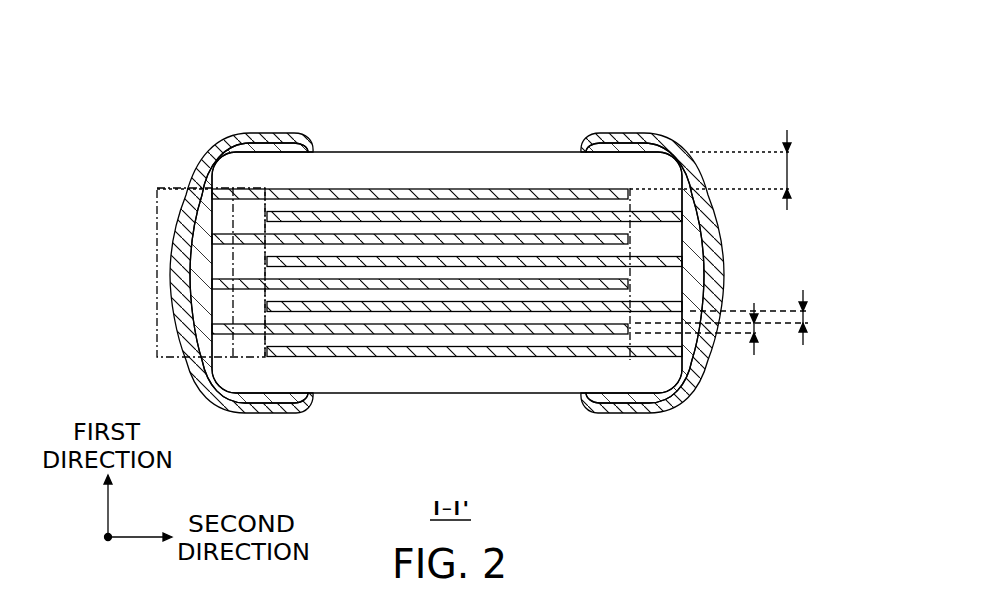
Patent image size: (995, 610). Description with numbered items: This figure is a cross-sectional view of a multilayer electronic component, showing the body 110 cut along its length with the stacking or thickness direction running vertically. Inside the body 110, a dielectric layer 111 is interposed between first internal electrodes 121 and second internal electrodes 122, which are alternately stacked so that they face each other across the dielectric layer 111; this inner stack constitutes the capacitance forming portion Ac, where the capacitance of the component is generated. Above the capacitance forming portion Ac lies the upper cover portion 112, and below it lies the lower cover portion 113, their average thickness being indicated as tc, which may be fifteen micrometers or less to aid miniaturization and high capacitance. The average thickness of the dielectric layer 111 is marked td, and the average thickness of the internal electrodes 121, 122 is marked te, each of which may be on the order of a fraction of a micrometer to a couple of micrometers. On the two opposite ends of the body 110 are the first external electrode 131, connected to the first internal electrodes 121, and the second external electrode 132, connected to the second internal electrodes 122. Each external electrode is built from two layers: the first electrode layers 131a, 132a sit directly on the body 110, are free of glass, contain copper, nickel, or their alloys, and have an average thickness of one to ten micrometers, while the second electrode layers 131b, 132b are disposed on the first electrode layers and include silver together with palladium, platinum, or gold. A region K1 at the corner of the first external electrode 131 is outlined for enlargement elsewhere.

The body 110 is at (405, 151).
The dielectric layer 111 is at (343, 228).
The upper cover portion 112 is at (462, 168).
The lower cover portion 113 is at (462, 372).
The first internal electrode 121 is at (512, 194).
The second internal electrode 122 is at (563, 216).
The first external electrode 131 is at (168, 273).
The first electrode layer 131a is at (177, 242).
The second electrode layer 131b is at (177, 270).
The second external electrode 132 is at (727, 273).
The first electrode layer 132a is at (707, 240).
The second electrode layer 132b is at (708, 266).
The region K1 is at (157, 332).
The capacitance forming portion Ac is at (530, 358).
The average thickness of the cover portion tc is at (484, 170).
The average thickness of the dielectric layer td is at (733, 317).
The average thickness of the internal electrodes te is at (708, 329).